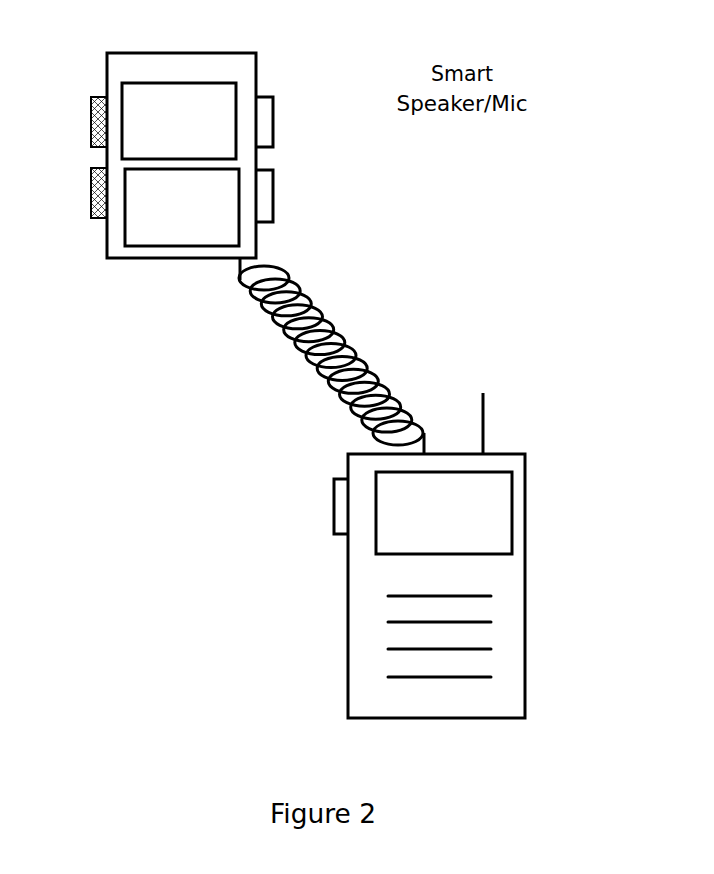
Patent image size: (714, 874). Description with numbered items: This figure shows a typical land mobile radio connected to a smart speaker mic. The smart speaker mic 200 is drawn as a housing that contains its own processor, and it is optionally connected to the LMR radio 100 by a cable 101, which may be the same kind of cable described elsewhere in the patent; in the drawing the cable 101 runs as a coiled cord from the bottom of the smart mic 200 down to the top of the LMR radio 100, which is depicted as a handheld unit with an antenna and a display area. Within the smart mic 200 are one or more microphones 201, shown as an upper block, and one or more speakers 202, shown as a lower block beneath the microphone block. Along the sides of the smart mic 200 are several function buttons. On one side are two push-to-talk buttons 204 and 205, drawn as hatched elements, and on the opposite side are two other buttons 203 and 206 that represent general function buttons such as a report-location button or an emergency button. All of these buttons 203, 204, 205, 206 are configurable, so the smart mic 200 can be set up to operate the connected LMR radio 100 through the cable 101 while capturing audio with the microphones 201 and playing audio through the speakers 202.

The LMR radio 100 is at (462, 573).
The cable 101 is at (331, 356).
The smart speaker mic 200 is at (181, 138).
The microphone 201 is at (179, 121).
The speaker 202 is at (182, 207).
The function button 203 is at (288, 122).
The PTT button 204 is at (72, 122).
The PTT button 205 is at (72, 193).
The function button 206 is at (291, 196).